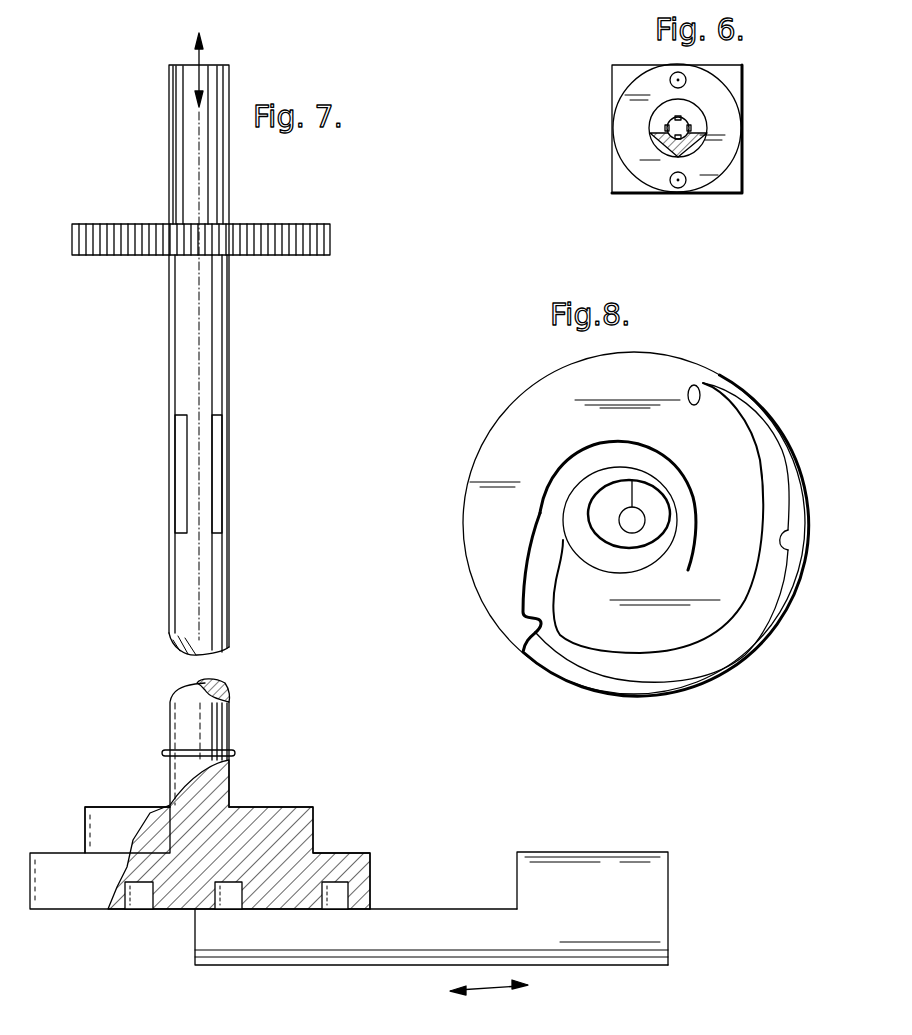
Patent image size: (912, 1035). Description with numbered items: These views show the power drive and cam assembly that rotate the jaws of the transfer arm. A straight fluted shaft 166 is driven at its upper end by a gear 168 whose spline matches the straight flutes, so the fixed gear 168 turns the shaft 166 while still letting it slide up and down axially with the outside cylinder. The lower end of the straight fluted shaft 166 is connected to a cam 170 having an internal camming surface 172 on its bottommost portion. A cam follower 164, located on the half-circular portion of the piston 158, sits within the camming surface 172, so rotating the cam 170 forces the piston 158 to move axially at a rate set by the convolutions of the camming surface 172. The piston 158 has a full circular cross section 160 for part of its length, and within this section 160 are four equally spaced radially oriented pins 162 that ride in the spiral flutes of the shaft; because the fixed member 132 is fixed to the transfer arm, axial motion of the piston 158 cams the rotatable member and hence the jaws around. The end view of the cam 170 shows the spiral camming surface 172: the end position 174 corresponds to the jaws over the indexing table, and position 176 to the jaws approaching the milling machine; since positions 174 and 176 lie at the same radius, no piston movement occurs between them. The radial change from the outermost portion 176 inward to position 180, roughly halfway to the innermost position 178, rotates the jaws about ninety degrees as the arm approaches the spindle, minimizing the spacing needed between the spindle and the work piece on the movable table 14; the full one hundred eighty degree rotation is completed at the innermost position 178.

In FIG. 7, the movable table 14 is at (170, 803).
In FIG. 6, the fixed member 132 is at (645, 167).
In FIG. 7, the piston 158 is at (372, 943).
In FIG. 6, the piston 158 is at (707, 133).
In FIG. 7, the full circular cross section 160 is at (513, 872).
In FIG. 6, the full circular cross section 160 is at (647, 93).
In FIG. 6, the pins 162 is at (687, 115).
In FIG. 7, the cam follower 164 is at (372, 872).
In FIG. 7, the straight fluted shaft 166 is at (222, 490).
In FIG. 7, the gear 168 is at (297, 224).
In FIG. 7, the cam 170 is at (107, 817).
In FIG. 8, the cam 170 is at (484, 440).
In FIG. 7, the camming surface 172 is at (137, 906).
In FIG. 8, the camming surface 172 is at (795, 541).
In FIG. 8, the end position 174 is at (697, 407).
In FIG. 8, the position 176 is at (540, 625).
In FIG. 8, the position 178 is at (645, 518).
In FIG. 8, the position 180 is at (545, 563).